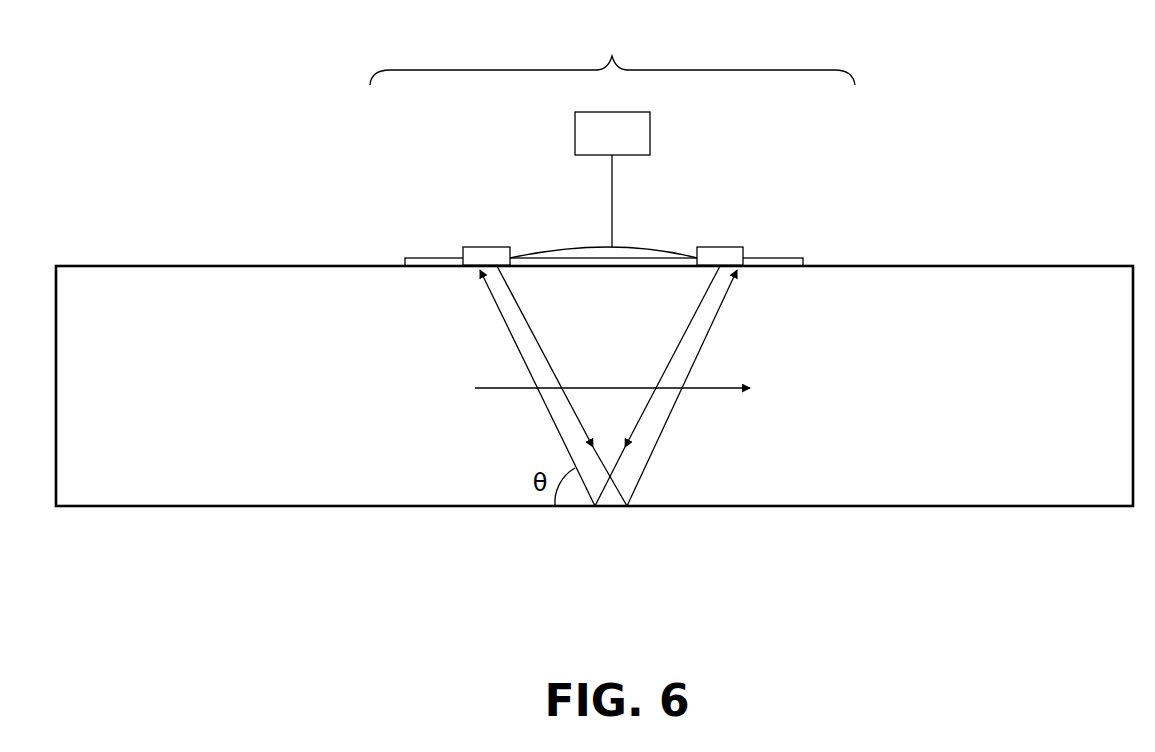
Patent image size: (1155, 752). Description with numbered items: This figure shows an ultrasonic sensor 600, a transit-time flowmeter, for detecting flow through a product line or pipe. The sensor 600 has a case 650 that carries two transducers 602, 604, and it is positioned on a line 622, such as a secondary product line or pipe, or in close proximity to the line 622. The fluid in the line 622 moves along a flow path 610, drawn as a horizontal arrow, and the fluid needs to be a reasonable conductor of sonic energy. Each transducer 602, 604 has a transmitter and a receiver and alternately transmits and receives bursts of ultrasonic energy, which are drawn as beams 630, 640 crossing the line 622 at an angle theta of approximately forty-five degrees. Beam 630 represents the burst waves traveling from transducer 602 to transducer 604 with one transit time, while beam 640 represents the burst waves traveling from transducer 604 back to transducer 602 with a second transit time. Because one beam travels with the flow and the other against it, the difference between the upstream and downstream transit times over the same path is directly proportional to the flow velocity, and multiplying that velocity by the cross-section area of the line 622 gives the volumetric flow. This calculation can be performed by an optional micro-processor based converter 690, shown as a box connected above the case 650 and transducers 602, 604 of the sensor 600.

The sensor 600 is at (612, 54).
The transducer 602 is at (493, 247).
The transducer 604 is at (710, 247).
The flow path 610 is at (716, 386).
The line 622 is at (162, 508).
The beam 630 is at (535, 335).
The beam 640 is at (677, 345).
The case 650 is at (783, 258).
The micro-processor based converter 690 is at (612, 179).